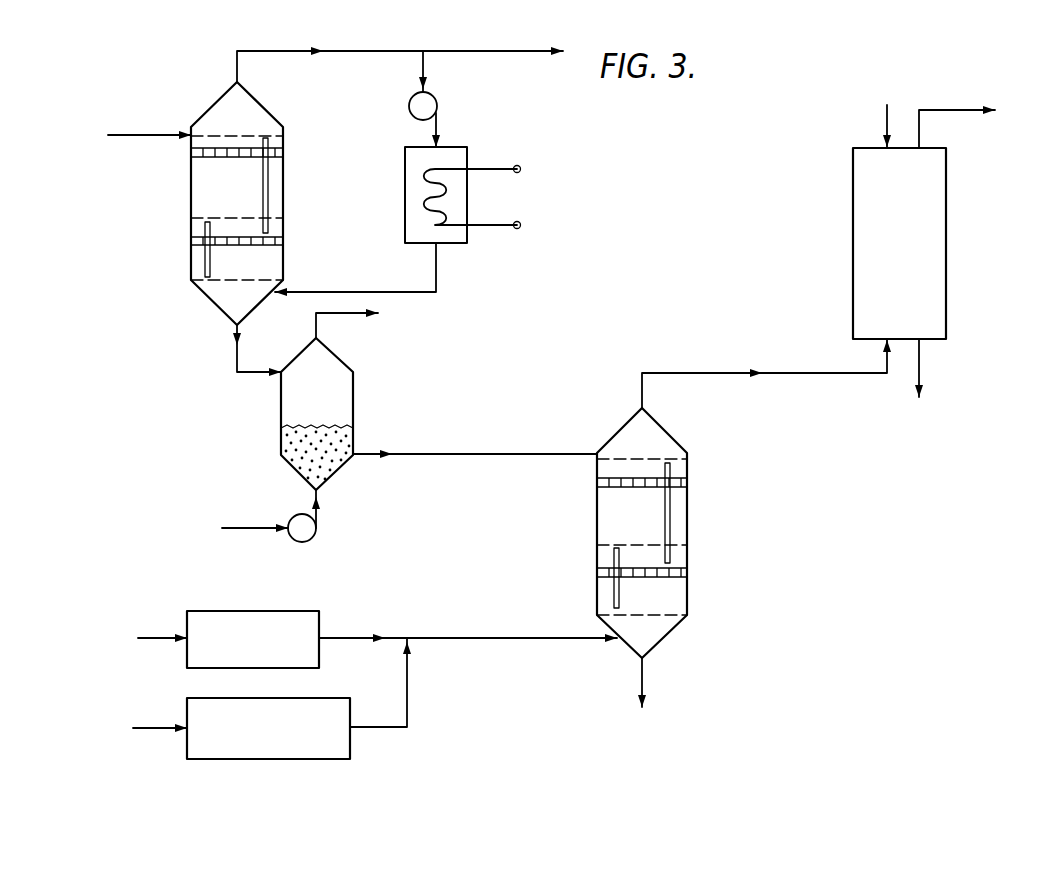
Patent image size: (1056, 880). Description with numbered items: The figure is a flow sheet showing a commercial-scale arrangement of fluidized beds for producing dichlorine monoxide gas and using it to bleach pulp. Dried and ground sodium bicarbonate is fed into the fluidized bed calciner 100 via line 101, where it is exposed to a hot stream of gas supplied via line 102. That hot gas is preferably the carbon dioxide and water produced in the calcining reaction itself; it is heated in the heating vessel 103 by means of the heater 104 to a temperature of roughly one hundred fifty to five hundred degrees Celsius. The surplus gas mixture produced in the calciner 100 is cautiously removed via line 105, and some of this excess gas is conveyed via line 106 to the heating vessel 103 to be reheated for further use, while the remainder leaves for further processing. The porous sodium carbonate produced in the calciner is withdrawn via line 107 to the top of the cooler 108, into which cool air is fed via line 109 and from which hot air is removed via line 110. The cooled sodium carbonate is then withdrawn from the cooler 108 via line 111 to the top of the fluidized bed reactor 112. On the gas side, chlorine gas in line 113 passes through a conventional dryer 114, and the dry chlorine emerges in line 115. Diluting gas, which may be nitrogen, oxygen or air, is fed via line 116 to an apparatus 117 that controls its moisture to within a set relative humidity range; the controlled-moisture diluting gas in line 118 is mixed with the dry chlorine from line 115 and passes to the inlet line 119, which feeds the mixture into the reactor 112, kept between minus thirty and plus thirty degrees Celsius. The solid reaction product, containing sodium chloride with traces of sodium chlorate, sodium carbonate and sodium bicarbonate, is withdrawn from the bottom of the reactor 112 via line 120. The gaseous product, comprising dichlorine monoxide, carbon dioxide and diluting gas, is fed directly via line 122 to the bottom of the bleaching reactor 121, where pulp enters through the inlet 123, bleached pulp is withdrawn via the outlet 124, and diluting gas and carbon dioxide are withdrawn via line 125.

The fluidized bed calciner 100 is at (330, 213).
The line 101 is at (142, 134).
The line 102 is at (355, 292).
The heating vessel 103 is at (450, 153).
The heater 104 is at (425, 200).
The line 105 is at (298, 52).
The line 106 is at (423, 70).
The line 107 is at (237, 362).
The cooler 108 is at (353, 410).
The line 109 is at (316, 515).
The line 110 is at (360, 313).
The line 111 is at (550, 453).
The fluidized bed reactor 112 is at (687, 513).
The line 113 is at (150, 636).
The dryer 114 is at (277, 615).
The line 115 is at (355, 636).
The line 116 is at (145, 727).
The apparatus 117 is at (343, 714).
The line 118 is at (407, 704).
The inlet line 119 is at (512, 637).
The line 120 is at (645, 672).
The bleaching reactor 121 is at (946, 245).
The line 122 is at (798, 374).
The inlet 123 is at (887, 118).
The outlet 124 is at (920, 363).
The line 125 is at (937, 110).